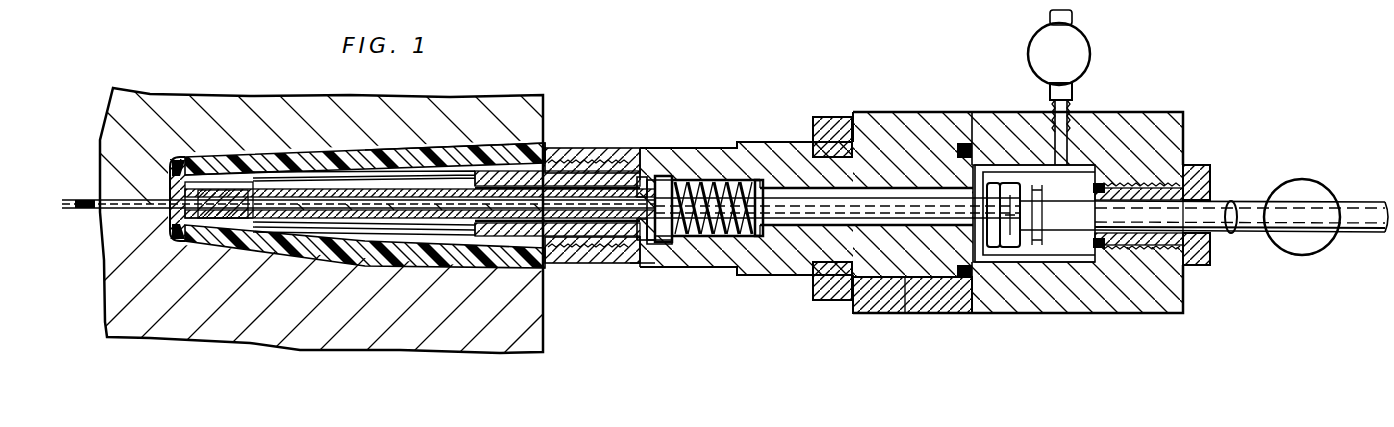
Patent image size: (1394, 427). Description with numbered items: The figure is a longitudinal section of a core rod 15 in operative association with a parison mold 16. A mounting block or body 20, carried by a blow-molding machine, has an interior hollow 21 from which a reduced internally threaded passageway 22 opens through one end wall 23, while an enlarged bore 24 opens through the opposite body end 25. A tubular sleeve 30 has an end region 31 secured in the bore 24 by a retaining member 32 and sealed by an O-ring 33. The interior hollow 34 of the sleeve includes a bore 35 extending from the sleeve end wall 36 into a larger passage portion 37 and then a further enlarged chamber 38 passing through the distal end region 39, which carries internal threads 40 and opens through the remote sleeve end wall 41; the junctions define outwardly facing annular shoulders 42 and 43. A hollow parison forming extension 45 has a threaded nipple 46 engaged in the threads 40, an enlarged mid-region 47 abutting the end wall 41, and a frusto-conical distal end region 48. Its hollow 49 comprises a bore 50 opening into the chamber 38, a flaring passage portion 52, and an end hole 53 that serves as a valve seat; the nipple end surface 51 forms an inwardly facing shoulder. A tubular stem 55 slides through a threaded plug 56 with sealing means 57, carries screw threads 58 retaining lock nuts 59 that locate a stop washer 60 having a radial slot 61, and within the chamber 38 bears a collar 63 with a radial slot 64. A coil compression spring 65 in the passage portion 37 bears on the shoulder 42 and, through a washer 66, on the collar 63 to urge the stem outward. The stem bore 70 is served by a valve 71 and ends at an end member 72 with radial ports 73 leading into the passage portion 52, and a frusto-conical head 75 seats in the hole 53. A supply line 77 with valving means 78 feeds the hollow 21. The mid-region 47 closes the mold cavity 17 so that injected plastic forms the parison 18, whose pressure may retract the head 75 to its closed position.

The core rod 15 is at (820, 301).
The parison mold 16 is at (106, 262).
The parison mold cavity 17 is at (366, 212).
The parison 18 is at (327, 153).
The mounting block or body 20 is at (1155, 314).
The interior hollow 21 is at (1033, 310).
The internally threaded passageway 22 is at (1212, 200).
The end wall 23 is at (1185, 285).
The enlarged bore 24 is at (875, 280).
The body end 25 is at (843, 306).
The mounting member or sleeve 30 is at (782, 141).
The end region 31 is at (940, 146).
The retaining member 32 is at (832, 130).
The O-ring 33 is at (912, 305).
The interior hollow 34 is at (807, 186).
The bore 35 is at (905, 186).
The sleeve end wall 36 is at (1003, 172).
The passage portion 37 is at (722, 240).
The chamber 38 is at (658, 178).
The distal end region 39 is at (561, 158).
The internal threads 40 is at (598, 161).
The sleeve end wall 41 is at (540, 264).
The internal annular shoulder 42 is at (756, 238).
The internal annular shoulder 43 is at (658, 240).
The parison forming extension 45 is at (432, 266).
The nipple 46 is at (640, 177).
The mid-region 47 is at (522, 156).
The frusto-conical distal end region 48 is at (337, 243).
The hollow 49 is at (507, 166).
The bore 50 is at (500, 230).
The end surface 51 is at (628, 260).
The enlarged passage portion 52 is at (455, 170).
The opening or hole 53 is at (180, 222).
The stem 55 is at (1061, 230).
The bearing member or plug 56 is at (1198, 172).
The sealing means 57 is at (1102, 180).
The external screw threads 58 is at (1028, 257).
The lock nuts 59 is at (990, 247).
The stop member or washer 60 is at (977, 253).
The radial slot 61 is at (980, 178).
The collar 63 is at (636, 266).
The radial groove or slot 64 is at (651, 185).
The coil compression spring 65 is at (738, 178).
The washer 66 is at (672, 180).
The bore 70 is at (357, 258).
The valve 71 is at (1302, 240).
The end member or closure 72 is at (228, 160).
The radial ports 73 is at (252, 220).
The valve head 75 is at (172, 177).
The fluid pressure supply line 77 is at (1073, 14).
The valving means 78 is at (1083, 52).